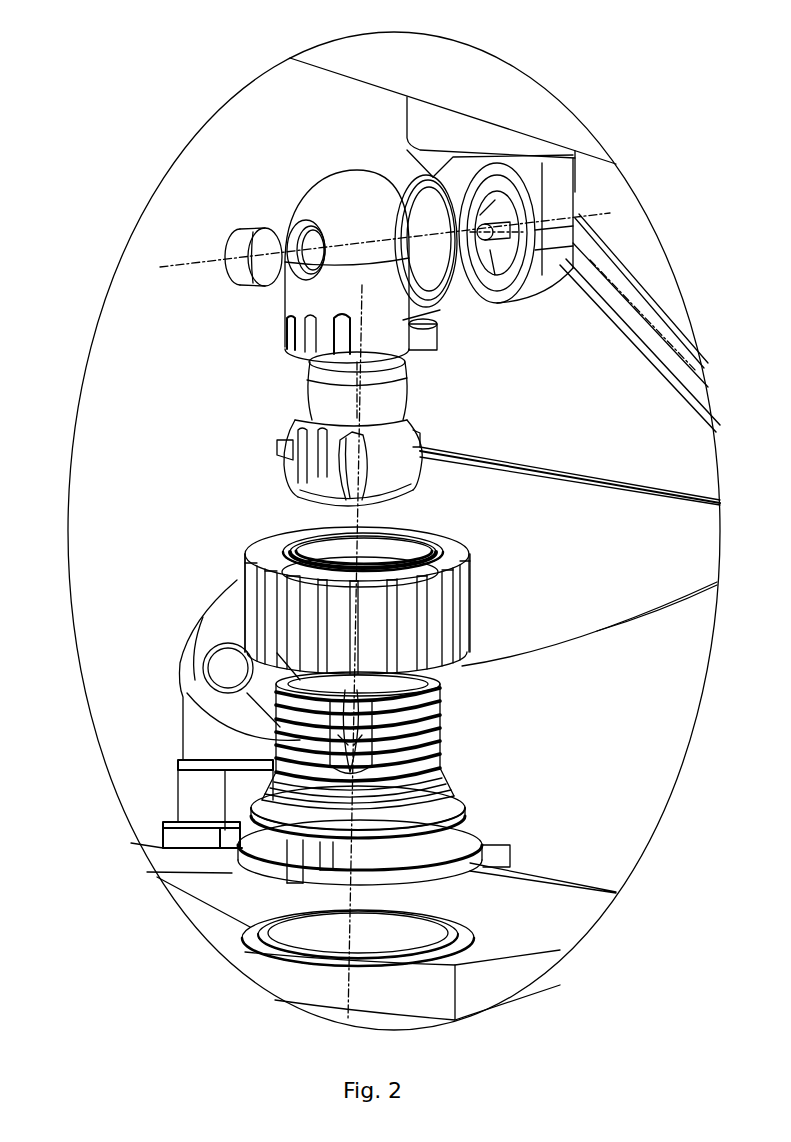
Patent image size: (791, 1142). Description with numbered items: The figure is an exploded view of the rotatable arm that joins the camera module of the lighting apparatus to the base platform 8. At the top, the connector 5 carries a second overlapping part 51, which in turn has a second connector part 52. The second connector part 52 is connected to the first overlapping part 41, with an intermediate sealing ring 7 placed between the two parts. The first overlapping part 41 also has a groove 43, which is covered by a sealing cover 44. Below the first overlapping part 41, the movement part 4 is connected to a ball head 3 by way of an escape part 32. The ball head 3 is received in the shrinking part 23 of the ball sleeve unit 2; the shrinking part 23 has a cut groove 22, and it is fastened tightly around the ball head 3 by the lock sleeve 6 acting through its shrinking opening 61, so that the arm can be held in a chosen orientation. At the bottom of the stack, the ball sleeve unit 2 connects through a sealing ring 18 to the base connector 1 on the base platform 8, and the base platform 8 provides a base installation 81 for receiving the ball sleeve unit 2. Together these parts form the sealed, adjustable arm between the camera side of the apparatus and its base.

The base connector 1 is at (410, 846).
The ball sleeve unit 2 is at (465, 764).
The ball head 3 is at (325, 467).
The movement part 4 is at (345, 402).
The connector 5 is at (483, 144).
The lock sleeve 6 is at (478, 605).
The sealing ring 7 is at (405, 185).
The base platform 8 is at (500, 968).
The sealing ring 18 is at (466, 819).
The cut groove 22 is at (348, 749).
The shrinking part 23 is at (282, 724).
The escape part 32 is at (306, 509).
The first overlapping part 41 is at (337, 211).
The groove 43 is at (308, 240).
The sealing cover 44 is at (242, 250).
The second overlapping part 51 is at (555, 199).
The second connector part 52 is at (506, 265).
The shrinking opening 61 is at (430, 521).
The base installation 81 is at (240, 943).